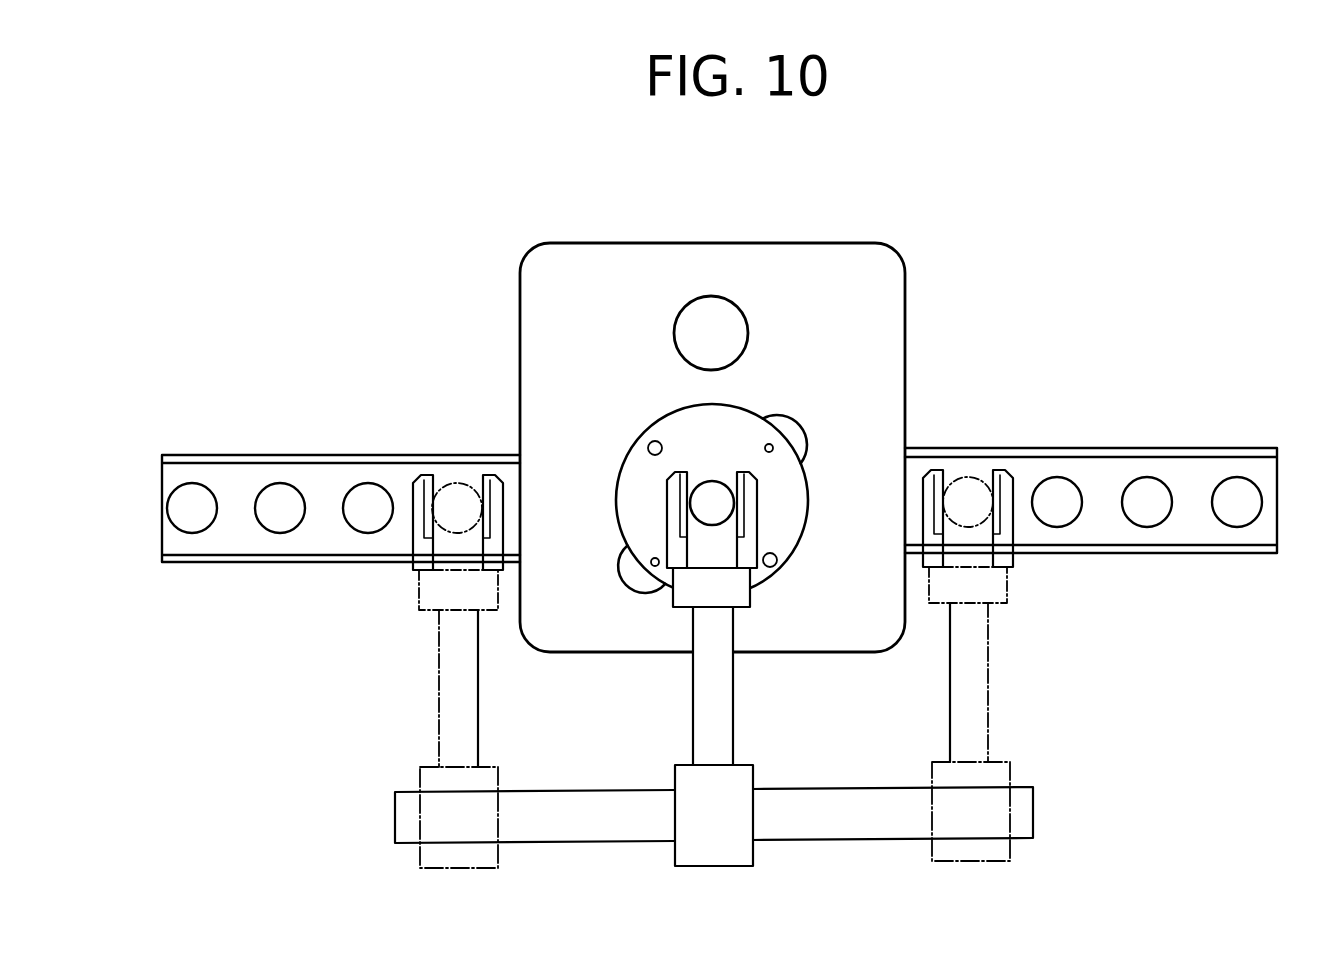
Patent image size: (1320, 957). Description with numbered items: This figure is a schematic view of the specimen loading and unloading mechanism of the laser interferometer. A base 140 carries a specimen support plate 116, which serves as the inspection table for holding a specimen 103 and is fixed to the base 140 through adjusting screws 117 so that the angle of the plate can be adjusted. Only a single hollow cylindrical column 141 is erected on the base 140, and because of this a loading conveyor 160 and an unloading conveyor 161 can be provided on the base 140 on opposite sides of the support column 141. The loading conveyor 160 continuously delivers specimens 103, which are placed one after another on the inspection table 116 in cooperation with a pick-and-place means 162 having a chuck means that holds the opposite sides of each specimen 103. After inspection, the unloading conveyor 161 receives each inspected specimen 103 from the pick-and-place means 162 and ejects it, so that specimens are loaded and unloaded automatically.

The specimen 103 is at (713, 487).
The specimen support plate 116 is at (676, 422).
The adjusting screws 117 is at (800, 430).
The base 140 is at (822, 278).
The hollow cylindrical column 141 is at (715, 297).
The loading conveyor 160 is at (328, 456).
The unloading conveyor 161 is at (1098, 448).
The pick-and-place means 162 is at (733, 718).